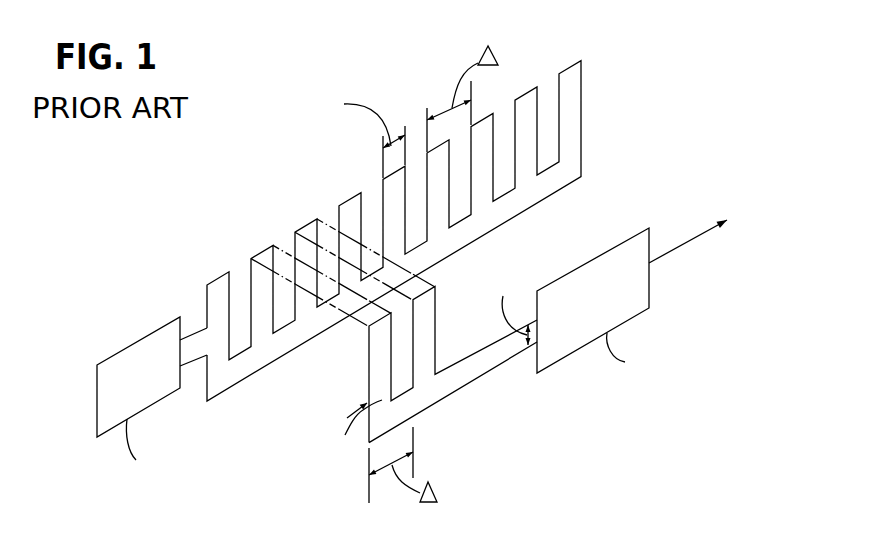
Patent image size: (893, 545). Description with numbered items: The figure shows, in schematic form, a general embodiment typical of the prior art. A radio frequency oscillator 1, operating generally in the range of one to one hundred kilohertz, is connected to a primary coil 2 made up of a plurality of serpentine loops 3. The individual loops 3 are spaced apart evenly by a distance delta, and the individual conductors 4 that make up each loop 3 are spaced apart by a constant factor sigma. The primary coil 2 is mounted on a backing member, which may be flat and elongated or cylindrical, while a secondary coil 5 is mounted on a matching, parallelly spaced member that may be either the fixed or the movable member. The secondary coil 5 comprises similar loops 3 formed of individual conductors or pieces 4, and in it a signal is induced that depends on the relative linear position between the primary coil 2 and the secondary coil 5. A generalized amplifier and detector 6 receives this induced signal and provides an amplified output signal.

The radio frequency oscillator 1 is at (112, 356).
The primary coil 2 is at (601, 130).
The serpentine loop 3 is at (213, 278).
The conductor 4 is at (374, 224).
The secondary coil 5 is at (441, 332).
The amplifier and detector 6 is at (628, 242).